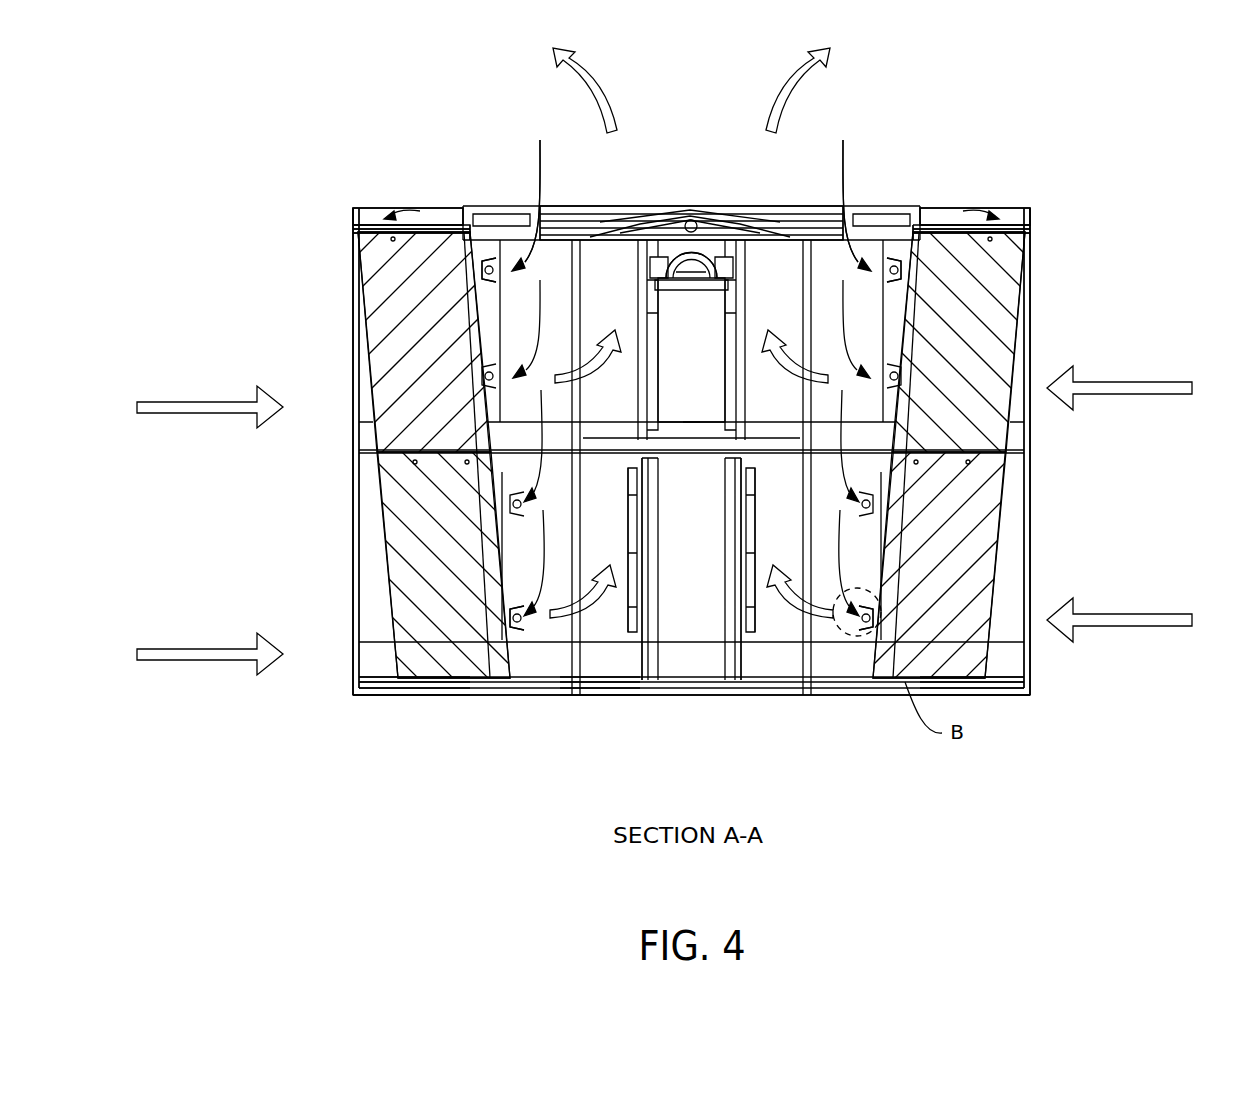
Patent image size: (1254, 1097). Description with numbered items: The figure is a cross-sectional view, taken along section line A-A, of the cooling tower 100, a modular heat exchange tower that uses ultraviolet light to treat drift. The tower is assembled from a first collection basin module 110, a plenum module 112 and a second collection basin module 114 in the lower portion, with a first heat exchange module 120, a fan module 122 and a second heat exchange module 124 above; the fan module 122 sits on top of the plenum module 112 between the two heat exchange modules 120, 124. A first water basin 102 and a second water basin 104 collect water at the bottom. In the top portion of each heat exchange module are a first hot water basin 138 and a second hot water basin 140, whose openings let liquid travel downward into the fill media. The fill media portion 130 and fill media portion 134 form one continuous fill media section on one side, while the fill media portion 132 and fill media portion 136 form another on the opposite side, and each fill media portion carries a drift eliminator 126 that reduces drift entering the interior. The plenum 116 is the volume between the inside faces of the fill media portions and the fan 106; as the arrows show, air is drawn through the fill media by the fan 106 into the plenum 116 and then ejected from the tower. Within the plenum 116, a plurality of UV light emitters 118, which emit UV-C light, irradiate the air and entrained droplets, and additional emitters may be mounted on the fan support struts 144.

The cooling tower 100 is at (968, 100).
The first water basin 102 is at (357, 660).
The second water basin 104 is at (1030, 663).
The fan 106 is at (762, 203).
The first collection basin module 110 is at (357, 628).
The plenum module 112 is at (612, 695).
The second collection basin module 114 is at (1028, 568).
The plenum 116 is at (683, 575).
The ultraviolet (UV) light emitters 118 is at (691, 188).
The first heat exchange module 120 is at (357, 240).
The fan module 122 is at (685, 207).
The second heat exchange module 124 is at (1028, 335).
The drift eliminator 126 is at (475, 416).
The fill media portion 130 is at (410, 565).
The fill media portion 132 is at (1028, 503).
The fill media portion 134 is at (415, 345).
The fill media portion 136 is at (1028, 275).
The first hot water basin 138 is at (420, 209).
The second hot water basin 140 is at (1012, 215).
The fan support struts 144 is at (852, 638).